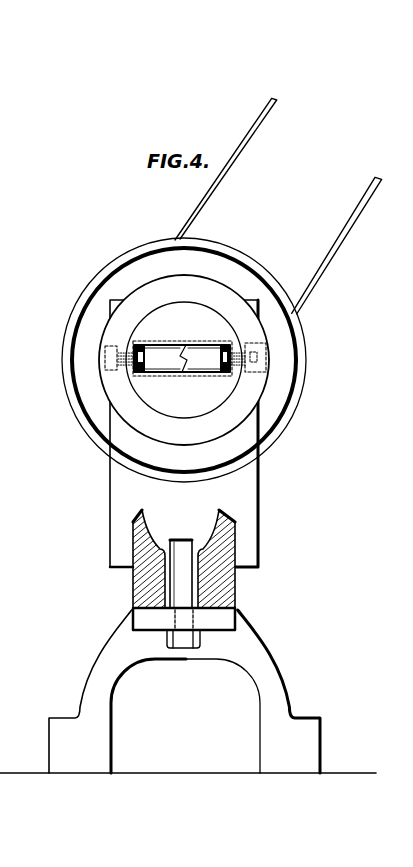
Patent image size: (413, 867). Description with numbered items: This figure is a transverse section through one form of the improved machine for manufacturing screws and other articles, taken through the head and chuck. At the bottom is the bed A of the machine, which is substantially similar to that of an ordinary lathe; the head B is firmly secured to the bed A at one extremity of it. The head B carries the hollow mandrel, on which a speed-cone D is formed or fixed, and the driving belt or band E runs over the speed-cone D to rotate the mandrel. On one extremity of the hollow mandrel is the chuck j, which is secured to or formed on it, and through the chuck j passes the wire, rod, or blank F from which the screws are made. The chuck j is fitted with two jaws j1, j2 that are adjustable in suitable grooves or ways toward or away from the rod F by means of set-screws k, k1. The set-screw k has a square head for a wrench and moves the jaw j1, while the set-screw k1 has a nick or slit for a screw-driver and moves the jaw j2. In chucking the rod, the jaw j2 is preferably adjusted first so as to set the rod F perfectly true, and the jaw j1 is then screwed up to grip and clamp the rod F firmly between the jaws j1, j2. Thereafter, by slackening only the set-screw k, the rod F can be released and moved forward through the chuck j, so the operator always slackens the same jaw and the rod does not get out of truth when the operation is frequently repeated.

The bed A is at (188, 576).
The head B is at (184, 536).
The speed-cone D is at (304, 379).
The driving belt or band E is at (323, 263).
The wire, rod, or blank F is at (186, 352).
The chuck j is at (182, 371).
The jaw j1 is at (209, 358).
The jaw j2 is at (157, 358).
The set-screw k is at (229, 345).
The set-screw k1 is at (122, 351).